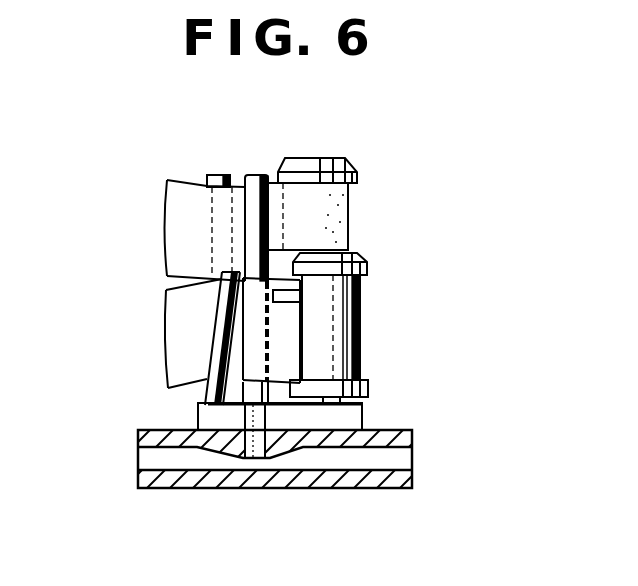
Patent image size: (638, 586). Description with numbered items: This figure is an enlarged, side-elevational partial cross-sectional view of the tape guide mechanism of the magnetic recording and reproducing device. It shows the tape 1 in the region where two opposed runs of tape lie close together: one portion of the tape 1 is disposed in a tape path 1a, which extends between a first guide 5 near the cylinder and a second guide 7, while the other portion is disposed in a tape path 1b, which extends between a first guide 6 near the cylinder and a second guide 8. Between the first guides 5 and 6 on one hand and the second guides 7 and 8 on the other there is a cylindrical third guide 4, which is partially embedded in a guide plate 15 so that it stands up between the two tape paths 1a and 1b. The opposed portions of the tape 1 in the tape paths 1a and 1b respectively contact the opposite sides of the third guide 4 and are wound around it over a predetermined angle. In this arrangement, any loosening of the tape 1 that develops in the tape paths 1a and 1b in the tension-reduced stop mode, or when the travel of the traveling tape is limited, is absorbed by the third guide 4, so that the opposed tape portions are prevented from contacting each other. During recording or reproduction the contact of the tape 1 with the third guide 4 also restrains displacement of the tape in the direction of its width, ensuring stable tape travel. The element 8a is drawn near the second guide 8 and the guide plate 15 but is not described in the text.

The tape 1 is at (167, 225).
The tape path 1a is at (276, 238).
The tape path 1b is at (283, 350).
The third guide member 4 is at (258, 175).
The first guide 5 is at (215, 175).
The first guide 6 is at (214, 342).
The second guide 7 is at (349, 209).
The second guide 8 is at (345, 318).
The base plate 8a is at (362, 418).
The guide plate 15 is at (312, 467).